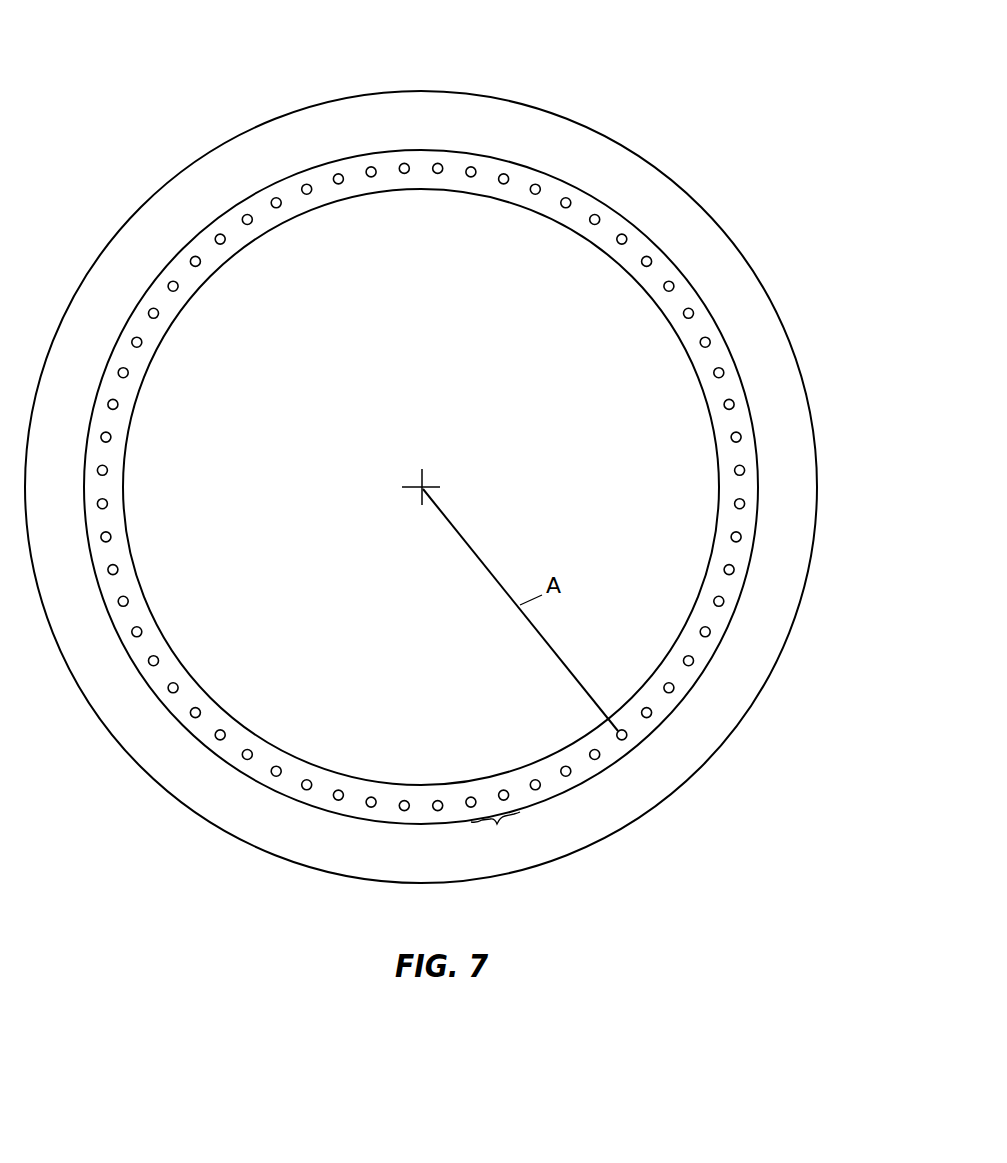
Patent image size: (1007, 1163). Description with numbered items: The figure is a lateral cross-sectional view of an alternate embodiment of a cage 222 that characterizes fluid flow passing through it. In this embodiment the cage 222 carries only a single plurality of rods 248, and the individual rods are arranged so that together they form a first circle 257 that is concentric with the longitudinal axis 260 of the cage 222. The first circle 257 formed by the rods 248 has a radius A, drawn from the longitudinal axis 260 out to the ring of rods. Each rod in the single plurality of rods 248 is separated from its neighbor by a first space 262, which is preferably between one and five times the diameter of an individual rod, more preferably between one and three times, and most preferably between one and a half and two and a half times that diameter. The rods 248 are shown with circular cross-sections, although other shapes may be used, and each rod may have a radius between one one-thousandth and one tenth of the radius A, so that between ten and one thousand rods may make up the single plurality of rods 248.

The cage 222 is at (621, 92).
The first circle 257 is at (586, 184).
The single plurality of rods 248 is at (734, 571).
The longitudinal axis 260 is at (423, 480).
The first space 262 is at (499, 835).